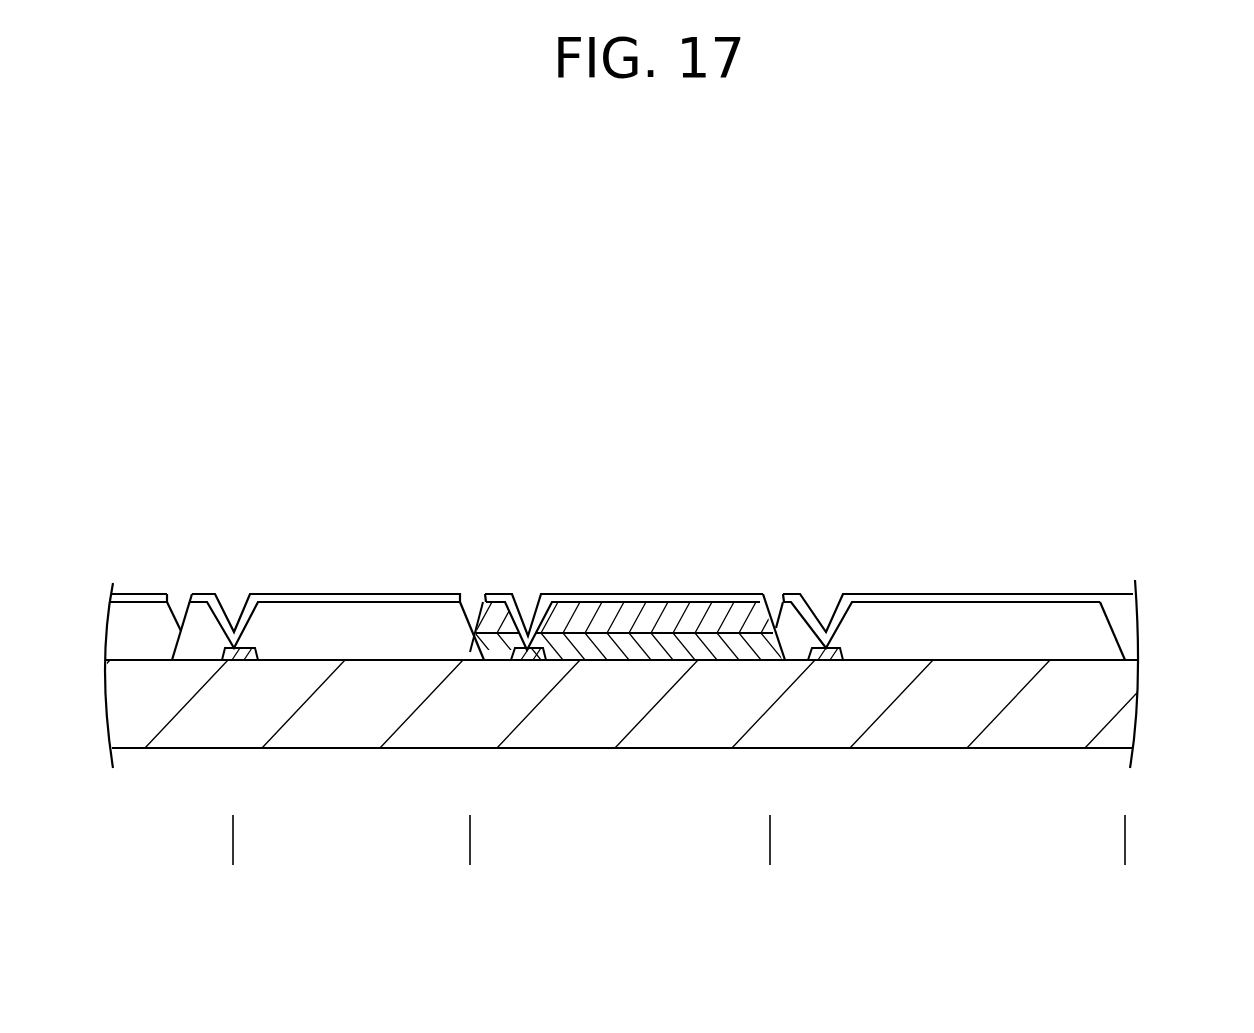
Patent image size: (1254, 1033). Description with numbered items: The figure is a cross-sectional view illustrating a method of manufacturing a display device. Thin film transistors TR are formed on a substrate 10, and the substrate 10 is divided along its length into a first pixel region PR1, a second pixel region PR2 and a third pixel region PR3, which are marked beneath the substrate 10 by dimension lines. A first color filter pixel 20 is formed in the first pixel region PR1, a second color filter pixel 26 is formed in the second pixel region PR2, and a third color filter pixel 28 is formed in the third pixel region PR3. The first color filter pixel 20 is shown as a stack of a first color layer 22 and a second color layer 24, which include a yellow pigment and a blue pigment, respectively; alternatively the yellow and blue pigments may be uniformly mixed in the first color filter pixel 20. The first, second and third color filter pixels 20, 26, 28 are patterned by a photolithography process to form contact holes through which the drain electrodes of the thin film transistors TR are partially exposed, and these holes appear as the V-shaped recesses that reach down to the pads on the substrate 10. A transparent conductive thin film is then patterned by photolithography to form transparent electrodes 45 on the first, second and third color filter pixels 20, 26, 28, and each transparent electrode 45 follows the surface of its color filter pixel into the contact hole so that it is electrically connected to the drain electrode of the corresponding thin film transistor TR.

The substrate 10 is at (1115, 688).
The first color filter pixel 20 is at (629, 563).
The first color layer 22 is at (666, 640).
The second color layer 24 is at (600, 618).
The second color filter pixel 26 is at (308, 618).
The third color filter pixel 28 is at (958, 620).
The transparent electrode 45 is at (398, 603).
The thin film transistor TR is at (530, 645).
The first pixel region PR1 is at (769, 856).
The second pixel region PR2 is at (1124, 856).
The third pixel region PR3 is at (469, 856).